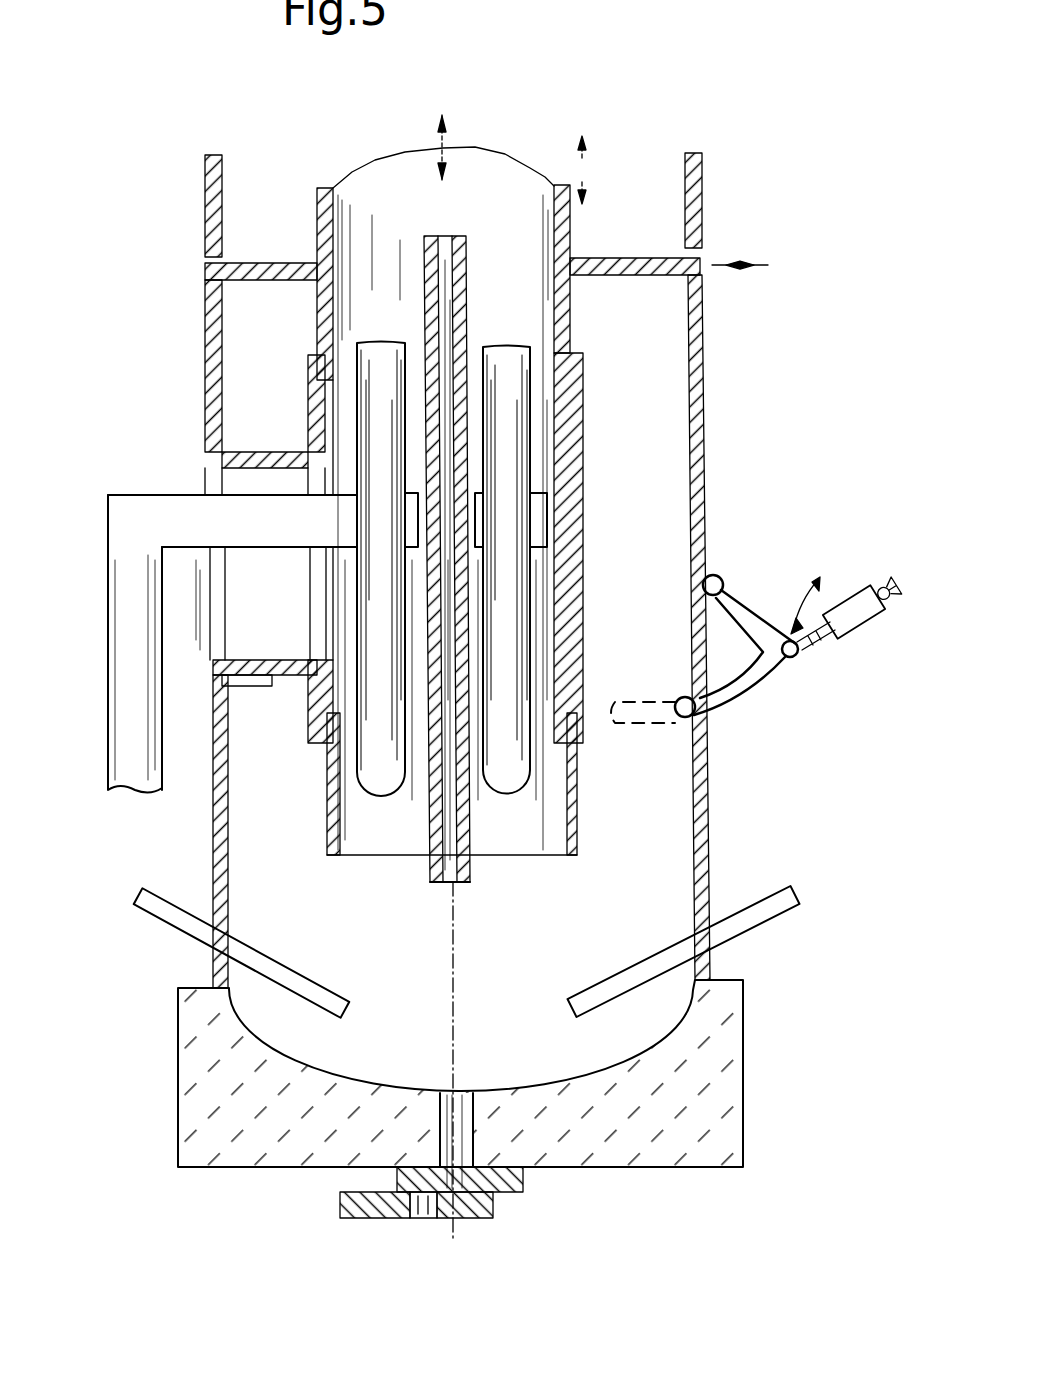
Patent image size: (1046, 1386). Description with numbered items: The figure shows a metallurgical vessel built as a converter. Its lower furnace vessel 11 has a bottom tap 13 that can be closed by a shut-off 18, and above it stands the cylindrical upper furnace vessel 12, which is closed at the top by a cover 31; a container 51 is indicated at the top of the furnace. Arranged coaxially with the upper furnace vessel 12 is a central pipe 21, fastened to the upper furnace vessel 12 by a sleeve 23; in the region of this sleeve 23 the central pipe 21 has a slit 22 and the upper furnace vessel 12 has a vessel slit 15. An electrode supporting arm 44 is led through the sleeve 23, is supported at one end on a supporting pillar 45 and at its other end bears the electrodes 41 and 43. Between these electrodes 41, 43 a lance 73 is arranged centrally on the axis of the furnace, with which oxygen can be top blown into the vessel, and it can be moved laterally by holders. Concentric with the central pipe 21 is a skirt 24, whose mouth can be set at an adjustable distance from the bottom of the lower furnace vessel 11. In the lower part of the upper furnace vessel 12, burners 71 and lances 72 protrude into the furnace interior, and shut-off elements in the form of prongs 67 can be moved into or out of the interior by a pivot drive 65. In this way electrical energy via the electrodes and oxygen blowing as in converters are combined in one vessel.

The lower furnace vessel 11 is at (720, 1073).
The upper furnace vessel 12 is at (693, 485).
The bottom tap 13 is at (473, 1103).
The vessel slit 15 is at (218, 628).
The shut-off 18 is at (480, 1218).
The central pipe 21 is at (588, 650).
The slit 22 is at (318, 605).
The sleeve 23 is at (228, 690).
The skirt 24 is at (573, 818).
The cover 31 is at (615, 262).
The electrode 41 is at (385, 775).
The electrode 43 is at (515, 773).
The electrode supporting arm 44 is at (195, 523).
The supporting pillar 45 is at (137, 735).
The container 51 is at (700, 190).
The pivot drive 65 is at (858, 622).
The prongs 67 is at (762, 680).
The burners 71 is at (750, 918).
The lances 72 is at (167, 912).
The lance 73 is at (470, 882).